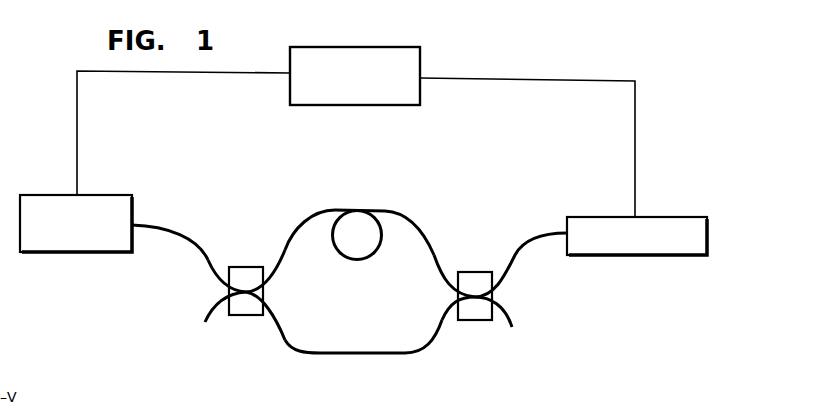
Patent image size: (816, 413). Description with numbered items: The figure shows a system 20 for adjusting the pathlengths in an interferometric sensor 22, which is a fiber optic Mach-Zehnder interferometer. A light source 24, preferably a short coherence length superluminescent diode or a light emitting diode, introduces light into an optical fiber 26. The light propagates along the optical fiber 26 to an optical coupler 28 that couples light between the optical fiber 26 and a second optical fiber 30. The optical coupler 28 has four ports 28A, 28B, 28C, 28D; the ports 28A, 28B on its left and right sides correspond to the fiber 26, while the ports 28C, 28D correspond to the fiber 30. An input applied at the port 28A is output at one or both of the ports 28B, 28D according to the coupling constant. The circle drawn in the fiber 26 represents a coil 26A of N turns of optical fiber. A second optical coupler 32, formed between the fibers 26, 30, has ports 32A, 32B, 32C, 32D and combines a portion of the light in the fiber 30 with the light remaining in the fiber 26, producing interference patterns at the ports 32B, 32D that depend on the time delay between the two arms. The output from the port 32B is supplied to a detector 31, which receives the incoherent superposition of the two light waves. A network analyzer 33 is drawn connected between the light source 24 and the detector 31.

The system 20 is at (348, 281).
The interferometric sensor 22 is at (400, 275).
The light source 24 is at (85, 195).
The optical fiber 26 is at (167, 225).
The coil 26A is at (385, 243).
The optical coupler 28 is at (254, 253).
The port 28A is at (203, 285).
The port 28B is at (327, 278).
The port 28C is at (193, 305).
The port 28D is at (302, 305).
The optical fiber 30 is at (352, 355).
The detector 31 is at (613, 255).
The optical coupler 32 is at (486, 256).
The port 32A is at (435, 289).
The port 32B is at (522, 293).
The port 32C is at (425, 308).
The port 32D is at (534, 310).
The network analyzer 33 is at (382, 105).